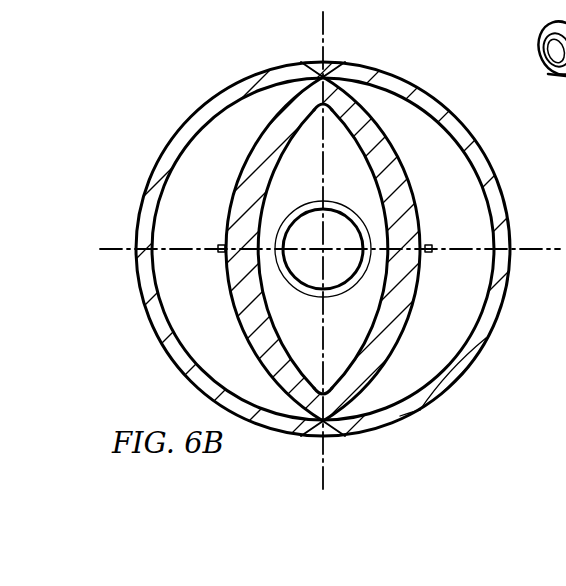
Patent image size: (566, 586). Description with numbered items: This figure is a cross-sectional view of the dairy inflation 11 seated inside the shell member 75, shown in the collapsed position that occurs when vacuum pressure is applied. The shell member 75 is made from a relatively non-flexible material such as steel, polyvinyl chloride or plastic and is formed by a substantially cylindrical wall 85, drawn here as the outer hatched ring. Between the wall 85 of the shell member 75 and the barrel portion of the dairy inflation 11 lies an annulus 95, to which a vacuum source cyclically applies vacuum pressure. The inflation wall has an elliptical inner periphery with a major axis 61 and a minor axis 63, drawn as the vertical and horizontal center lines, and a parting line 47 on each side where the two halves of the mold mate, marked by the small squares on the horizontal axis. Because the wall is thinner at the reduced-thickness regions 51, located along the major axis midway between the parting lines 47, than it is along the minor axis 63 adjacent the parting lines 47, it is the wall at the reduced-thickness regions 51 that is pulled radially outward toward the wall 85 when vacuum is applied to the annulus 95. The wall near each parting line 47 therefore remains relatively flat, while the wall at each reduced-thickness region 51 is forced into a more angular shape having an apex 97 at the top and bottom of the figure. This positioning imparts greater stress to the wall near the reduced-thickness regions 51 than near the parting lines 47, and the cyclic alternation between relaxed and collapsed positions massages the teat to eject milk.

The dairy inflation 11 is at (425, 264).
The parting line 47 is at (221, 244).
The reduced-thickness region 51 is at (330, 90).
The major axis 61 is at (324, 27).
The minor axis 63 is at (530, 248).
The shell member 75 is at (405, 87).
The wall 85 is at (182, 354).
The annulus 95 is at (208, 150).
The apex 97 is at (320, 77).